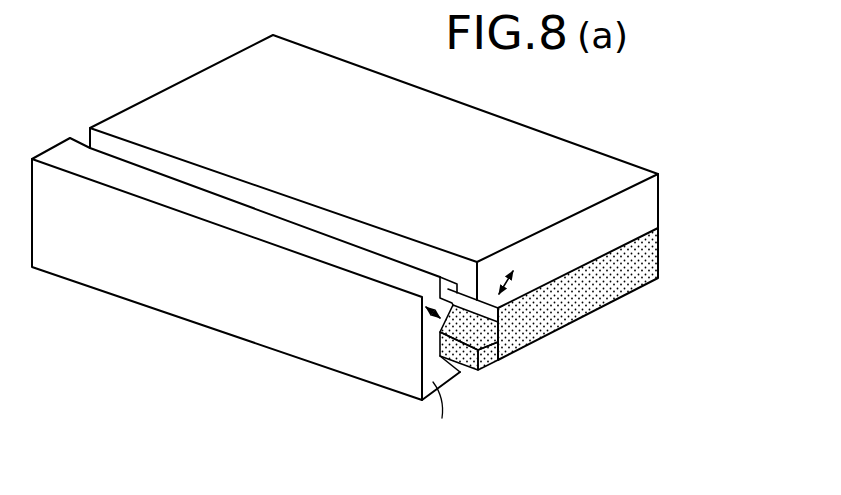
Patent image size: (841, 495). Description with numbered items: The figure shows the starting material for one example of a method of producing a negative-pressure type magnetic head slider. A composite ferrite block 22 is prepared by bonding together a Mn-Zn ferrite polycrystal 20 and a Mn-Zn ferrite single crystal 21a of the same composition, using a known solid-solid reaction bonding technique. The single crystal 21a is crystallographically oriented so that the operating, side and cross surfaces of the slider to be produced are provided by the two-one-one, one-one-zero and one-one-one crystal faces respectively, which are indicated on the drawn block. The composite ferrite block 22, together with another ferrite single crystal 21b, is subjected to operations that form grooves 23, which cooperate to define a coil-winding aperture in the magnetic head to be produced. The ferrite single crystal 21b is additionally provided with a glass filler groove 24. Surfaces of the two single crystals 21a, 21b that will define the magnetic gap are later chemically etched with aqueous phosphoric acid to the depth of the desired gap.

The Mn-Zn ferrite polycrystal 20 is at (650, 255).
The Mn-Zn ferrite single crystal 21a is at (659, 200).
The ferrite single crystal 21b is at (212, 318).
The composite ferrite block 22 is at (616, 312).
The grooves 23 is at (487, 323).
The glass filler groove 24 is at (444, 290).